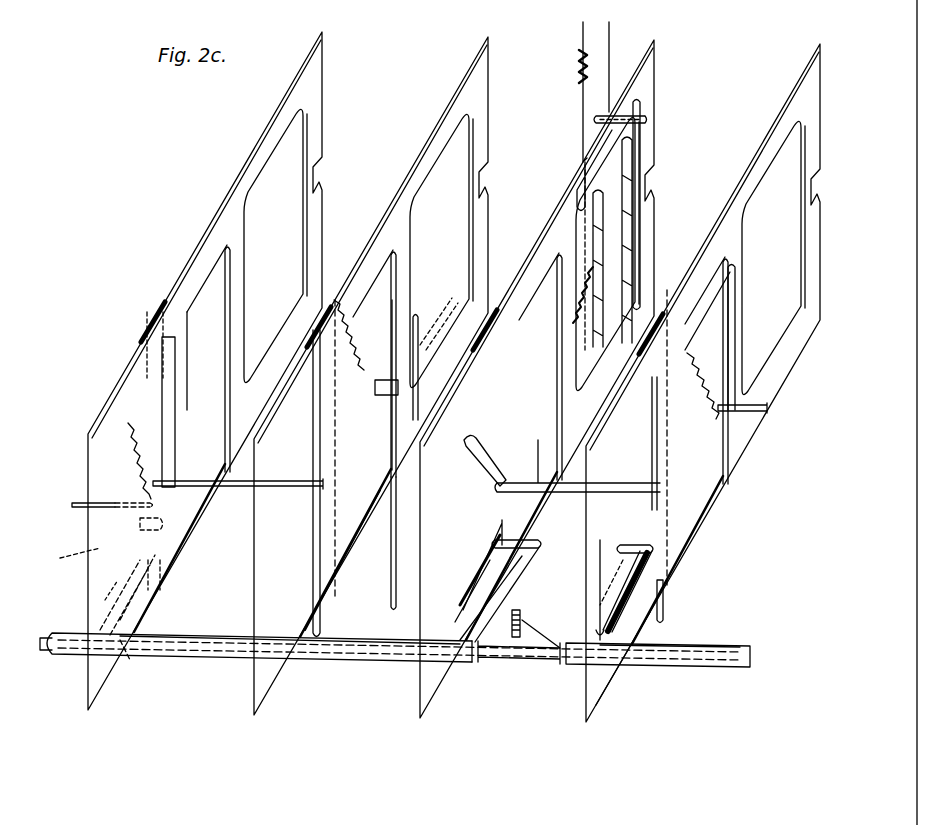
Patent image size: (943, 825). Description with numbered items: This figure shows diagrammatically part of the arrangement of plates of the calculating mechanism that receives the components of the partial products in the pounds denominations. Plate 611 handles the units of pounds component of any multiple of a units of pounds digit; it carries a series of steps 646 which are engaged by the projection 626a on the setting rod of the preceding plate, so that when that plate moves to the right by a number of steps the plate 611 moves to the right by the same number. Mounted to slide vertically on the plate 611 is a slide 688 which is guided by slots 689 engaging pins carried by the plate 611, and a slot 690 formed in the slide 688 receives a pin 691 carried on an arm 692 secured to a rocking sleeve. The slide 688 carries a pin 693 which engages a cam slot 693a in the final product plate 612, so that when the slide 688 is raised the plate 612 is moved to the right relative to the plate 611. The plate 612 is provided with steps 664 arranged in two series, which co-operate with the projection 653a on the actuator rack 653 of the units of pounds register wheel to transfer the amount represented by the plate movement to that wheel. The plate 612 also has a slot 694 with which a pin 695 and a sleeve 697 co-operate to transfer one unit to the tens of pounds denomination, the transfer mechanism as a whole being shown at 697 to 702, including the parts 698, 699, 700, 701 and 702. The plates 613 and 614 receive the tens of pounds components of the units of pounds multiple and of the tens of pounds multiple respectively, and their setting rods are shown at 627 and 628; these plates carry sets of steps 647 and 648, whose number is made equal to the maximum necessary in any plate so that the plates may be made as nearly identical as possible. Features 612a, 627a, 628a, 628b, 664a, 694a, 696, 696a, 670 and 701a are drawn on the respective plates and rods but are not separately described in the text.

The plate 614 is at (108, 705).
The plate 613 is at (272, 705).
The plate 612 is at (435, 716).
The plate 611 is at (590, 715).
The transfer mechanism element 698 is at (62, 638).
The shaft portion 670 is at (697, 656).
The sleeve 697 is at (224, 660).
The transfer mechanism element 702 is at (140, 342).
The set of steps 648 is at (143, 430).
The transfer mechanism element 701 is at (157, 448).
The lever arm 701a is at (93, 535).
The transfer mechanism element 699 is at (98, 570).
The transfer mechanism element 700 is at (135, 665).
The rod 628a is at (260, 520).
The set of steps 647 is at (388, 300).
The lever arm 627a is at (433, 350).
The rod 628b is at (325, 425).
The setting rod 628 is at (322, 595).
The setting rod 627 is at (388, 600).
The actuator rack 653 is at (600, 60).
The projection 653a is at (648, 118).
The tab 612a is at (645, 185).
The steps 664 is at (635, 240).
The pawl arm 664a is at (608, 300).
The pin 693 is at (538, 480).
The cam slot 693a is at (470, 440).
The slot 694 is at (476, 560).
The strip arm 694a is at (458, 605).
The pin 695 is at (520, 545).
The spring 696 is at (507, 608).
The spring end 696a is at (546, 630).
The steps 646 is at (703, 367).
The slots 689 is at (680, 323).
The slide 688 is at (667, 436).
The projection 626a is at (748, 418).
The arm 692 is at (617, 550).
The pin 691 is at (648, 540).
The slot 690 is at (612, 680).